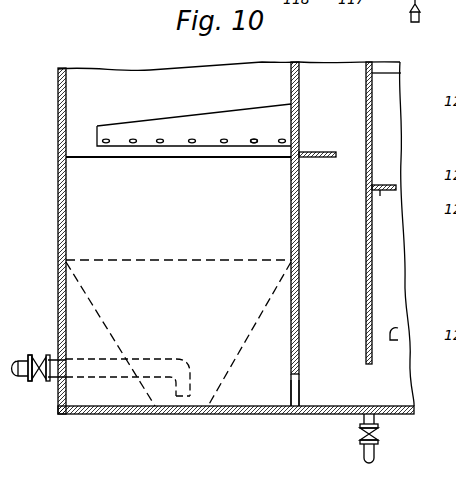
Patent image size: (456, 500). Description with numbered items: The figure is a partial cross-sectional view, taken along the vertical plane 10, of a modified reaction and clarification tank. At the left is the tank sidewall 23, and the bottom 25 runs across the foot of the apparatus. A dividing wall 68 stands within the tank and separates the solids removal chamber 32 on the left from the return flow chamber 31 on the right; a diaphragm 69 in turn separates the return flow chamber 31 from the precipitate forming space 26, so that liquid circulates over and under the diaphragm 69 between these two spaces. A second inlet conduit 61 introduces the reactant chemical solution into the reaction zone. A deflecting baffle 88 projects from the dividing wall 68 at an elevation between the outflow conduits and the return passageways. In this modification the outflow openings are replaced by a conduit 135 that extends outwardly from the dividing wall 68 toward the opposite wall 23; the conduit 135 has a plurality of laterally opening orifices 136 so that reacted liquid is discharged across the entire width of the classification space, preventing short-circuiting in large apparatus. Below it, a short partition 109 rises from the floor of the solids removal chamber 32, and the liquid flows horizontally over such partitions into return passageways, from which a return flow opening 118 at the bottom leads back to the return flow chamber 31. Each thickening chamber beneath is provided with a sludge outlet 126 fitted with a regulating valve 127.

The section line 10 is at (452, 284).
The sidewall 23 is at (58, 98).
The bottom 25 is at (181, 415).
The precipitate forming space 26 is at (396, 165).
The return flow chamber 31 is at (331, 68).
The solids removal chamber 32 is at (114, 68).
The second inlet conduit 61 is at (381, 196).
The dividing wall 68 is at (292, 68).
The diaphragm 69 is at (401, 73).
The deflecting baffle 88 is at (328, 151).
The short partition 109 is at (154, 159).
The return flow opening 118 is at (296, 388).
The sludge outlet 126 is at (50, 381).
The regulating valve 127 is at (42, 355).
The conduit 135 is at (226, 112).
The laterally opening orifice 136 is at (252, 145).